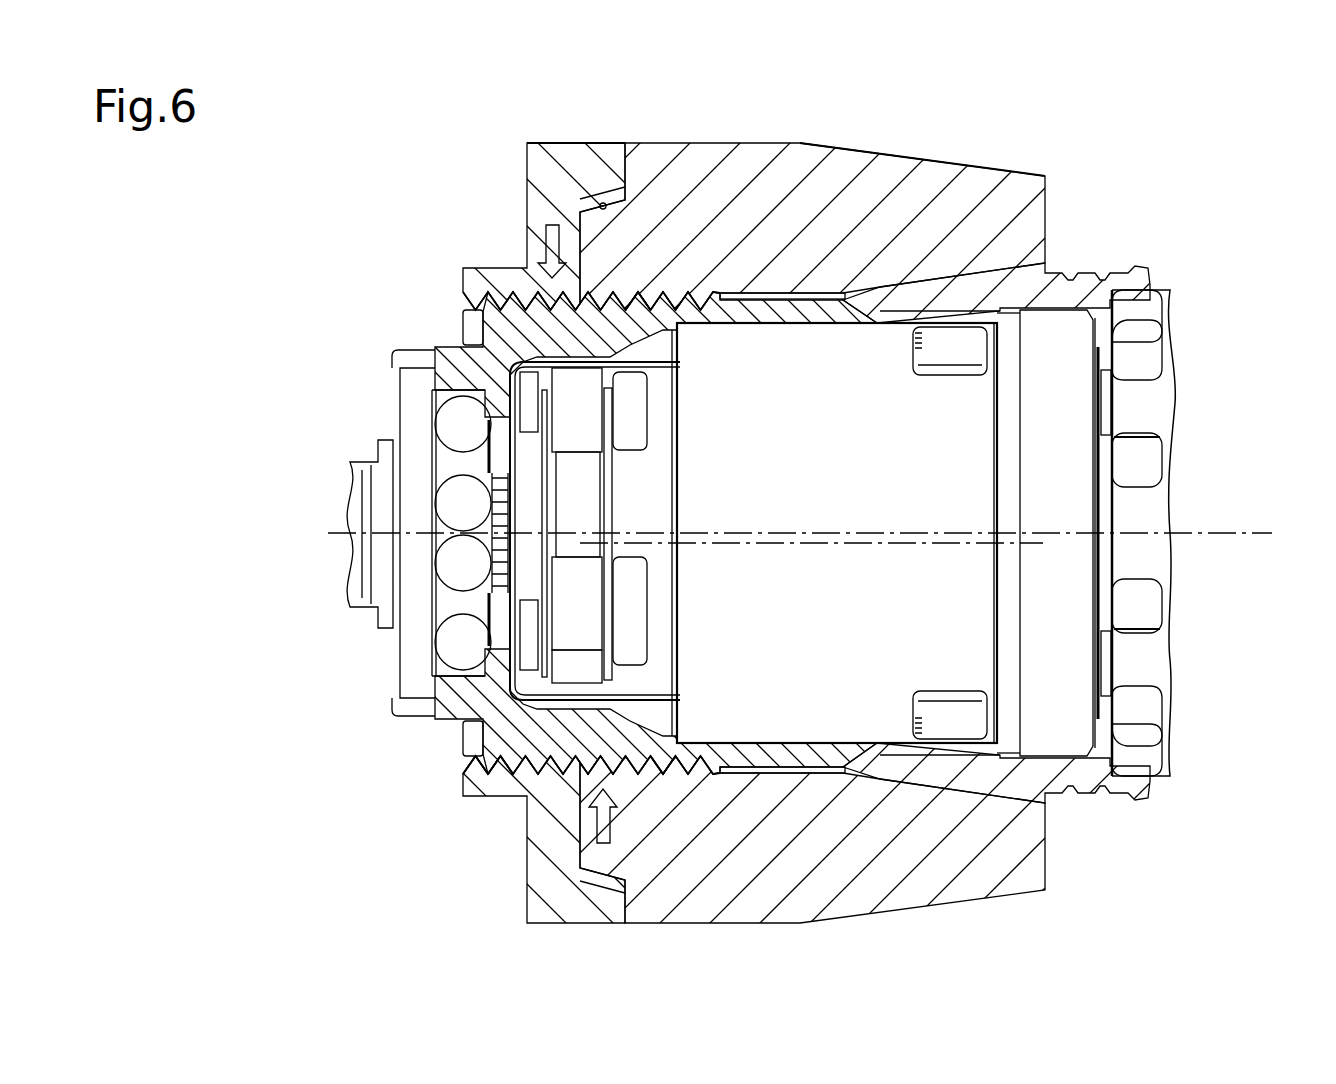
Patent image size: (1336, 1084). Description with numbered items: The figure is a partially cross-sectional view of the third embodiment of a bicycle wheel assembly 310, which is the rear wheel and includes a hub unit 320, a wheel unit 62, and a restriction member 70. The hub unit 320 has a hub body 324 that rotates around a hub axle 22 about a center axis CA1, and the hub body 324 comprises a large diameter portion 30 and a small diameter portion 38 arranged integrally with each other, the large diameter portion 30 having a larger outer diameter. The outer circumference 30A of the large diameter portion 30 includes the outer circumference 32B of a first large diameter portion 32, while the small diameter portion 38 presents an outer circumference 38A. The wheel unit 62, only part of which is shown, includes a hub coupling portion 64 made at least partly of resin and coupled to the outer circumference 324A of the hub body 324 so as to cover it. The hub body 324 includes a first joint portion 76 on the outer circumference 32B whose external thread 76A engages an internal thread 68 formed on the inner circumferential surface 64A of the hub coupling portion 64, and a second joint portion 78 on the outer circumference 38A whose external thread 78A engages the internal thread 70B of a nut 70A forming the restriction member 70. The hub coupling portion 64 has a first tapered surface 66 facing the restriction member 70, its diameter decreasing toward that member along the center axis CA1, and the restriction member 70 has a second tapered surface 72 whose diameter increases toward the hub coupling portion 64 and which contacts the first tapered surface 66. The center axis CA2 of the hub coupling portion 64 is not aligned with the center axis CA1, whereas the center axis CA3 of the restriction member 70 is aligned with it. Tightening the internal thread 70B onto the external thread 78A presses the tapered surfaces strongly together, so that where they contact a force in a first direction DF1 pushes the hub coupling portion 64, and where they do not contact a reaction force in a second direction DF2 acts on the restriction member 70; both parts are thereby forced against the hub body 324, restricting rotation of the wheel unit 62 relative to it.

The hub axle 22 is at (353, 460).
The large diameter portion 30 is at (790, 292).
The outer circumference of the large diameter portion 30A is at (793, 748).
The first large diameter portion 32 is at (736, 292).
The outer circumference of the first large diameter portion 32B is at (764, 776).
The small diameter portion 38 is at (473, 340).
The outer circumference of the small diameter portion 38A is at (475, 718).
The wheel unit 62 is at (690, 101).
The hub coupling portion 64 is at (898, 152).
The inner circumferential surface of the hub coupling portion 64A is at (830, 300).
The first tapered surface 66 is at (602, 210).
The internal thread 68 is at (638, 303).
The restriction member 70 is at (590, 120).
The nut 70A is at (548, 143).
The internal thread of the nut 70B is at (463, 306).
The second tapered surface 72 is at (607, 870).
The first joint portion 76 is at (688, 780).
The external thread of the first joint portion 76A is at (657, 778).
The second joint portion 78 is at (483, 778).
The external thread of the second joint portion 78A is at (509, 780).
The bicycle wheel assembly 310 is at (1147, 91).
The hub unit 320 is at (1140, 197).
The hub body 324 is at (1058, 249).
The outer circumference of the hub body 324A is at (943, 790).
The center axis of the hub body CA1 is at (1200, 533).
The center axis of the hub coupling portion CA2 is at (1033, 545).
The center axis of the restriction member CA3 is at (1260, 533).
The first direction DF1 is at (597, 830).
The second direction DF2 is at (546, 238).